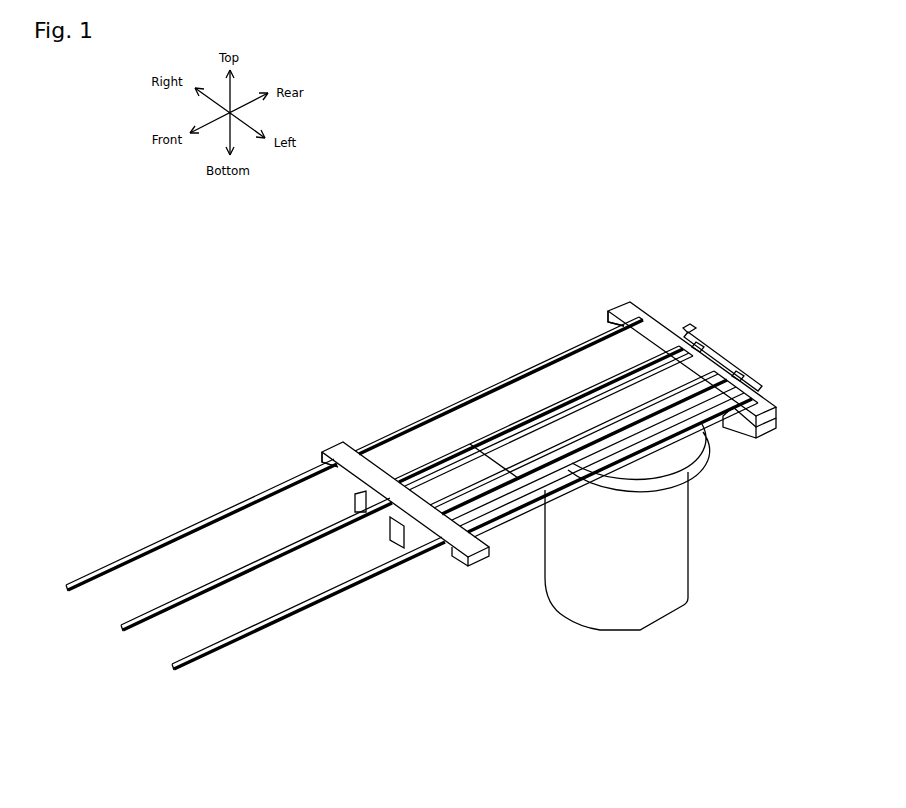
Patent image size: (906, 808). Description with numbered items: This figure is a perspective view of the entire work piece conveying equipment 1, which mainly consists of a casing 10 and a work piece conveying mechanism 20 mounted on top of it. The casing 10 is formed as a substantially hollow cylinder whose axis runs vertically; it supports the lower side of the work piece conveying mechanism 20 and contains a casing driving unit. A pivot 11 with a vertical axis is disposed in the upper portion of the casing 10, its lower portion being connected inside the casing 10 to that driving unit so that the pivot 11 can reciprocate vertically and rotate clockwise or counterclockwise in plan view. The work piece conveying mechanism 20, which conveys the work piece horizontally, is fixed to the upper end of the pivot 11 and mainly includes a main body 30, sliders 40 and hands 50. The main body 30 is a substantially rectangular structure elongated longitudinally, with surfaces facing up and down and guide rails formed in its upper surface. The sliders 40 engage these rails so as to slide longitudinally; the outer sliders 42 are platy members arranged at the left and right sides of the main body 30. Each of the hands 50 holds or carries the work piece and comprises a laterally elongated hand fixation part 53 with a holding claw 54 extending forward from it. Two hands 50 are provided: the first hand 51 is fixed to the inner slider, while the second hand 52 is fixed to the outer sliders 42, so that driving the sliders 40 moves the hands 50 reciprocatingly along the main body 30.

The work piece conveying equipment 1 is at (432, 439).
The casing 10 is at (547, 657).
The pivot 11 is at (688, 452).
The work piece conveying mechanism 20 is at (667, 244).
The main body 30 is at (736, 328).
The sliders 40 is at (734, 385).
The outer sliders 42 is at (684, 330).
The hands 50 is at (494, 404).
The first hand 51 is at (318, 395).
The second hand 52 is at (617, 259).
The hand fixation part 53 is at (628, 302).
The holding claw 54 is at (585, 480).